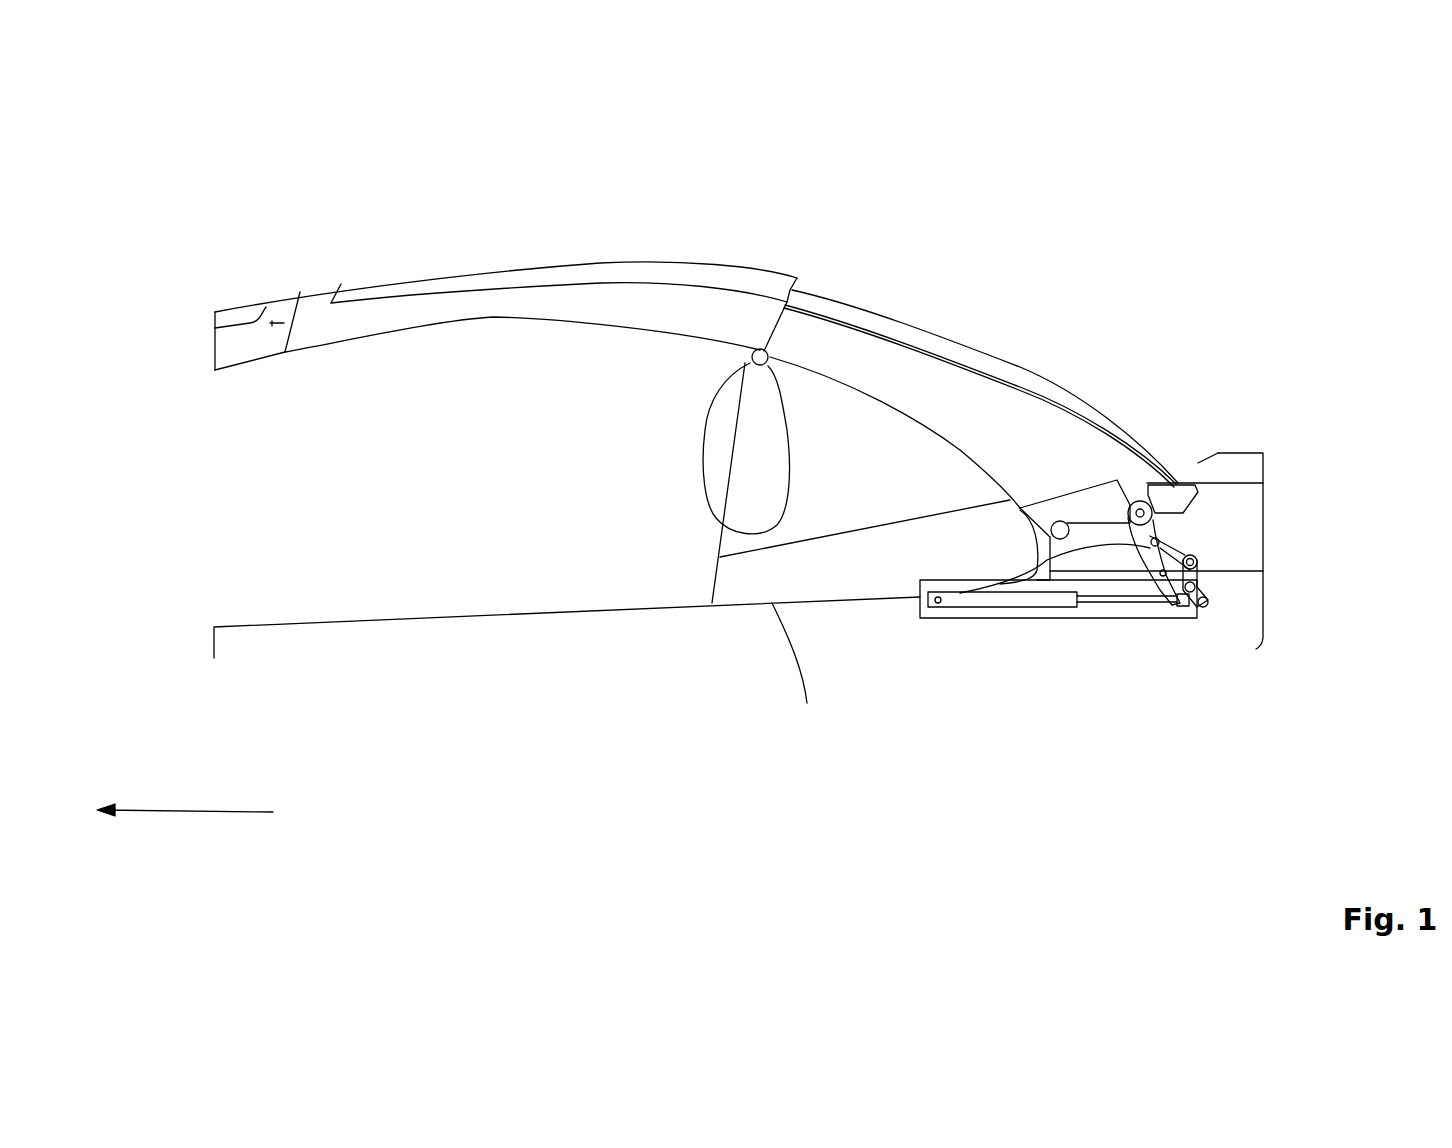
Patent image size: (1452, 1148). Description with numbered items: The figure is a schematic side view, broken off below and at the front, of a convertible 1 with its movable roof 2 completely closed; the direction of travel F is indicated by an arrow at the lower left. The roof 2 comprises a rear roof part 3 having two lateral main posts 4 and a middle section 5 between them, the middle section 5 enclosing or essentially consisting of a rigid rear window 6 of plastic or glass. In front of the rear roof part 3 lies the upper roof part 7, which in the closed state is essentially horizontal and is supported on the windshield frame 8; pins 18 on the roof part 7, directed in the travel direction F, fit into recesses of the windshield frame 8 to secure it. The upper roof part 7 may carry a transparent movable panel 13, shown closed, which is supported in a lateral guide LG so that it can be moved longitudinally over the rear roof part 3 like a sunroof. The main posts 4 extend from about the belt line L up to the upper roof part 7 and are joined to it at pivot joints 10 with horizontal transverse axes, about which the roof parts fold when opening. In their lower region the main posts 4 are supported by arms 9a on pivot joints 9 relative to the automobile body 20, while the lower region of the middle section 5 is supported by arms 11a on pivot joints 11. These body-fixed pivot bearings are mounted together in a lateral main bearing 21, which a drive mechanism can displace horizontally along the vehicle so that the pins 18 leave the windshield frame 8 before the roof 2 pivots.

The convertible 1 is at (1205, 203).
The movable roof 2 is at (858, 212).
The rear roof part 3 is at (1100, 360).
The main post 4 is at (911, 390).
The middle section 5 is at (988, 360).
The rear window 6 is at (1130, 418).
The upper roof part 7 is at (495, 316).
The windshield frame 8 is at (317, 300).
The pivot joint 9 is at (1167, 585).
The arm 9a is at (1043, 557).
The pivot joint 10 is at (770, 364).
The pivot joint 11 is at (1144, 504).
The arm 11a is at (1185, 498).
The movable panel 13 is at (537, 278).
The pin 18 is at (277, 326).
The automobile body 20 is at (880, 703).
The main bearing 21 is at (1040, 605).
The belt line L is at (807, 540).
The lateral guide LG is at (857, 323).
The direction of travel F is at (173, 811).